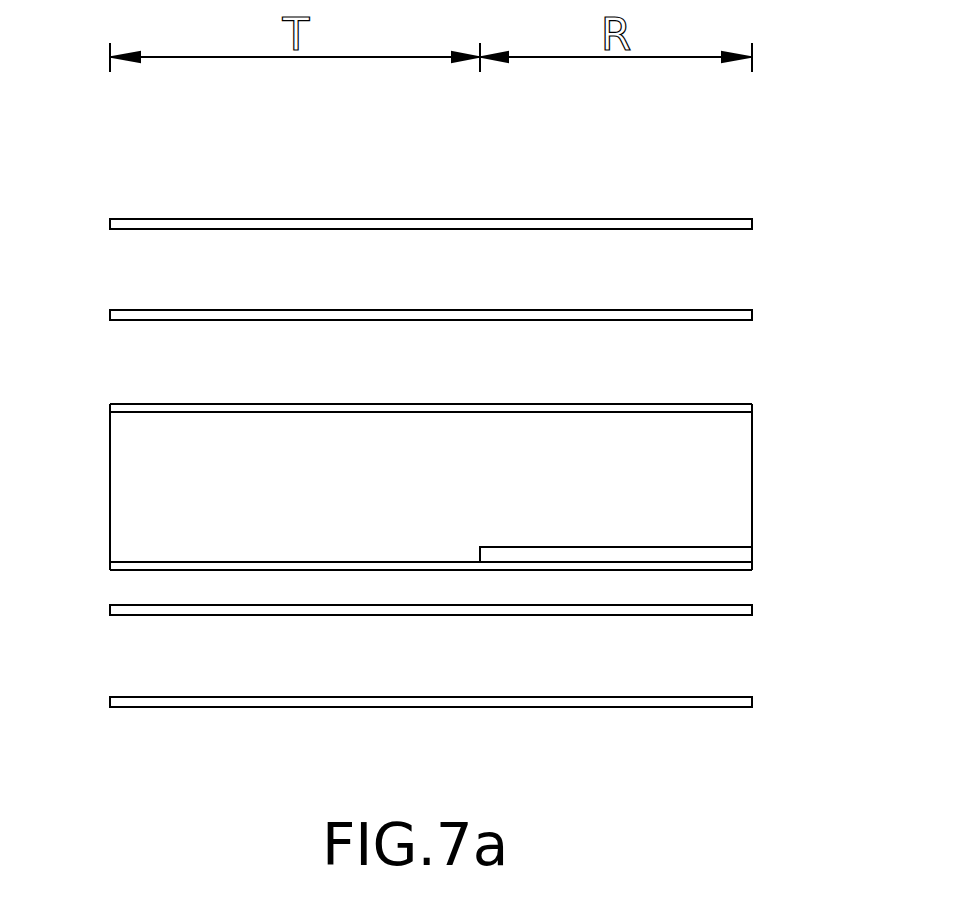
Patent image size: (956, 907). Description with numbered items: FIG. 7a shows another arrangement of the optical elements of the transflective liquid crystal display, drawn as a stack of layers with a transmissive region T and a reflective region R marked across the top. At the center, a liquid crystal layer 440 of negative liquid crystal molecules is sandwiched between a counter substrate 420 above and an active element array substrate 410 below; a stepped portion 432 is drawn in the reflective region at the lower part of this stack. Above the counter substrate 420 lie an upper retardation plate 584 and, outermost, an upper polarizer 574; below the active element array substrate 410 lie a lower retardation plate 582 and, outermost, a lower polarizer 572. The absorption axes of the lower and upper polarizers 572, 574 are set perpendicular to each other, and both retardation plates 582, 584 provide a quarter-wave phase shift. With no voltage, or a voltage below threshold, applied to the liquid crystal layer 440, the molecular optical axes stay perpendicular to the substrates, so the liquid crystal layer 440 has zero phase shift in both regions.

The upper polarizer 574 is at (110, 222).
The upper retardation plate 584 is at (110, 312).
The counter substrate 420 is at (110, 406).
The liquid crystal layer 440 is at (116, 493).
The active element array substrate 410 is at (110, 568).
The step portion 432 is at (745, 555).
The lower retardation plate 582 is at (750, 612).
The lower polarizer 572 is at (750, 703).